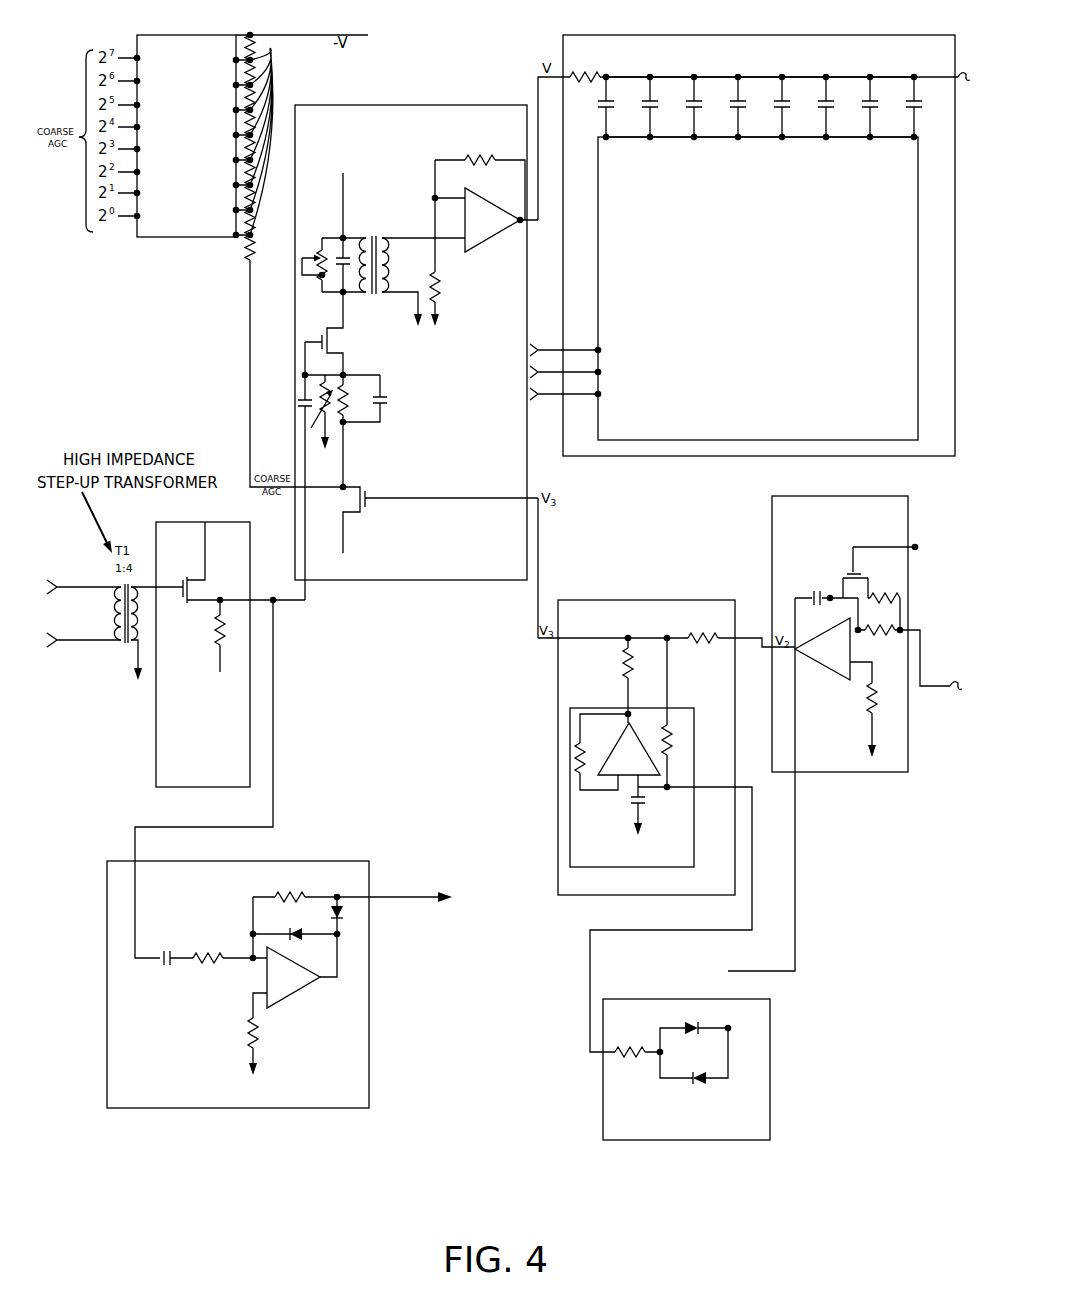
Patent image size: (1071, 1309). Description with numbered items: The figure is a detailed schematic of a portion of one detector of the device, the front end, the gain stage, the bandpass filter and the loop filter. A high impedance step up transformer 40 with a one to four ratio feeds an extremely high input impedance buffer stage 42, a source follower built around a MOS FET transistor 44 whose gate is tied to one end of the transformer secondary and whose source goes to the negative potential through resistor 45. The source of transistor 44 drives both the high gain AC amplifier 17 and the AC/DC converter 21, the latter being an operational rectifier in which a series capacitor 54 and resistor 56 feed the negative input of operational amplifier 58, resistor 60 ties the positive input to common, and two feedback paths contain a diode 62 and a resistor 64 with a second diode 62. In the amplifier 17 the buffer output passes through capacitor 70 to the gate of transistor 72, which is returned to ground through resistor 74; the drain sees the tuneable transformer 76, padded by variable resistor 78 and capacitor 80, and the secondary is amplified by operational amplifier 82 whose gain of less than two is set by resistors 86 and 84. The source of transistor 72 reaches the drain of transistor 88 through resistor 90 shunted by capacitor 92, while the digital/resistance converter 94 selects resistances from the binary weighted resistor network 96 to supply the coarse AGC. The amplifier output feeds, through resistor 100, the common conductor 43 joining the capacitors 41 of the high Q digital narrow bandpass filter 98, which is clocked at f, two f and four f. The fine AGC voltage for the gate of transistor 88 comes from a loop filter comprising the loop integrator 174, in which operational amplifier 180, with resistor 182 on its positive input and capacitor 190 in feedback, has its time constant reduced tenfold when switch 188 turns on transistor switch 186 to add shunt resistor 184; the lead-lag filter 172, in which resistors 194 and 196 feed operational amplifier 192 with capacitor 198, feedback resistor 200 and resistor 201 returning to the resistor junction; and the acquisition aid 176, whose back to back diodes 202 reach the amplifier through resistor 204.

The high gain AC amplifier 17 is at (385, 105).
The AC/DC converter 21 is at (325, 861).
The step up transformer 40 is at (116, 644).
The capacitor 41 is at (874, 102).
The buffer stage 42 is at (156, 740).
The common conductor 43 is at (720, 77).
The MOS FET transistor 44 is at (200, 578).
The resistor 45 is at (214, 636).
The capacitor 54 is at (165, 966).
The resistor 56 is at (205, 965).
The operational amplifier 58 is at (303, 995).
The resistor 60 is at (250, 1040).
The diode 62 is at (332, 910).
The resistor 64 is at (290, 892).
The capacitor 70 is at (300, 401).
The transistor 72 is at (327, 331).
The resistor 74 is at (320, 412).
The transformer 76 is at (383, 240).
The variable resistor 78 is at (320, 246).
The capacitor 80 is at (346, 236).
The operational amplifier 82 is at (497, 243).
The resistor 84 is at (443, 287).
The resistor 86 is at (482, 165).
The transistor 88 is at (361, 490).
The resistor 90 is at (347, 398).
The capacitor 92 is at (382, 396).
The digital/resistance converter 94 is at (177, 238).
The series binary weighted resistor network 96 is at (270, 48).
The high Q digital narrow bandpass filter 98 is at (630, 456).
The resistor 100 is at (585, 72).
The lead-lag filter 172 is at (620, 600).
The loop integrator 174 is at (842, 496).
The acquisition aid 176 is at (625, 999).
The operational amplifier 180 is at (808, 660).
The resistor 182 is at (876, 760).
The shunt resistor 184 is at (895, 596).
The transistor switch 186 is at (845, 572).
The switch 188 is at (920, 546).
The capacitor 190 is at (808, 598).
The operational amplifier 192 is at (632, 728).
The resistor 194 is at (703, 645).
The resistor 196 is at (672, 738).
The capacitor 198 is at (644, 802).
The resistor 200 is at (582, 785).
The resistor 201 is at (631, 657).
The back to back diodes 202 is at (693, 1036).
The resistor 204 is at (625, 1050).